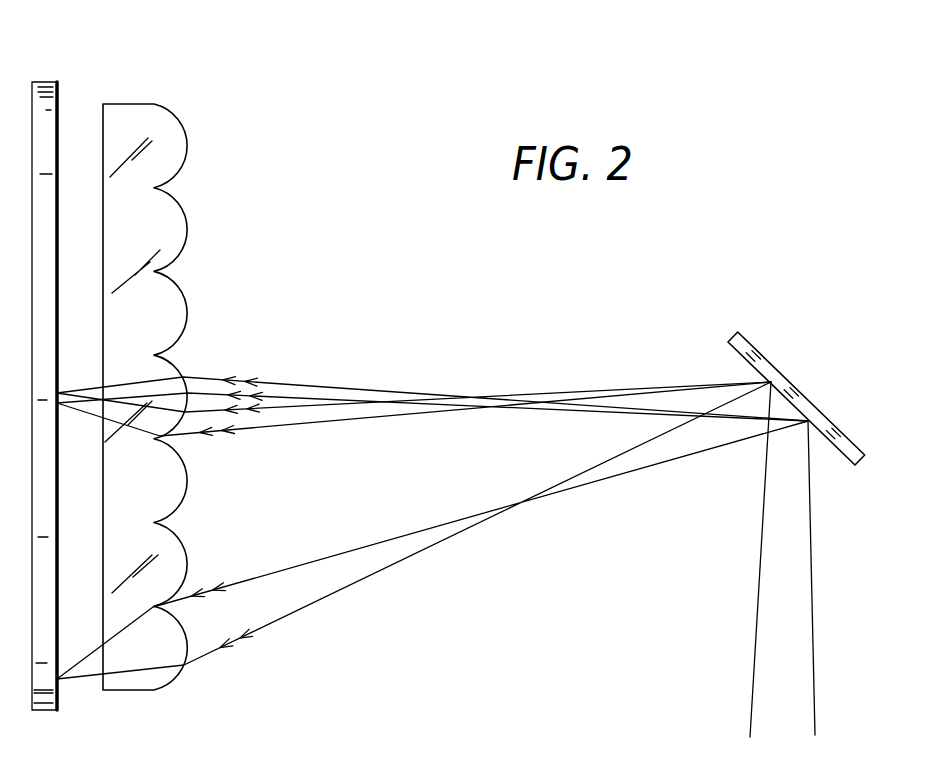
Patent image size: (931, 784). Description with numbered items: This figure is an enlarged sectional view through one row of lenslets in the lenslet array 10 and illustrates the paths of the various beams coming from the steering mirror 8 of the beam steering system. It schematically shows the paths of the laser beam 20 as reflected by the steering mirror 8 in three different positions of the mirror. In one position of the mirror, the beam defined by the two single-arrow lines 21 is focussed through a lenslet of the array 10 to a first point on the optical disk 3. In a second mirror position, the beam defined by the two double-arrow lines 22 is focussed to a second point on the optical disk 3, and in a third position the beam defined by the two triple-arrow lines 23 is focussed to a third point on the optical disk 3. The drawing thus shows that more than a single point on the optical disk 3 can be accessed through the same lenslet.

The optical disk 3 is at (58, 82).
The lenslet array 10 is at (178, 225).
The steering mirror 8 is at (730, 346).
The laser beam 20 is at (758, 591).
The single-arrow lines 21 is at (287, 383).
The double-arrow lines 22 is at (317, 398).
The triple-arrow lines 23 is at (352, 554).